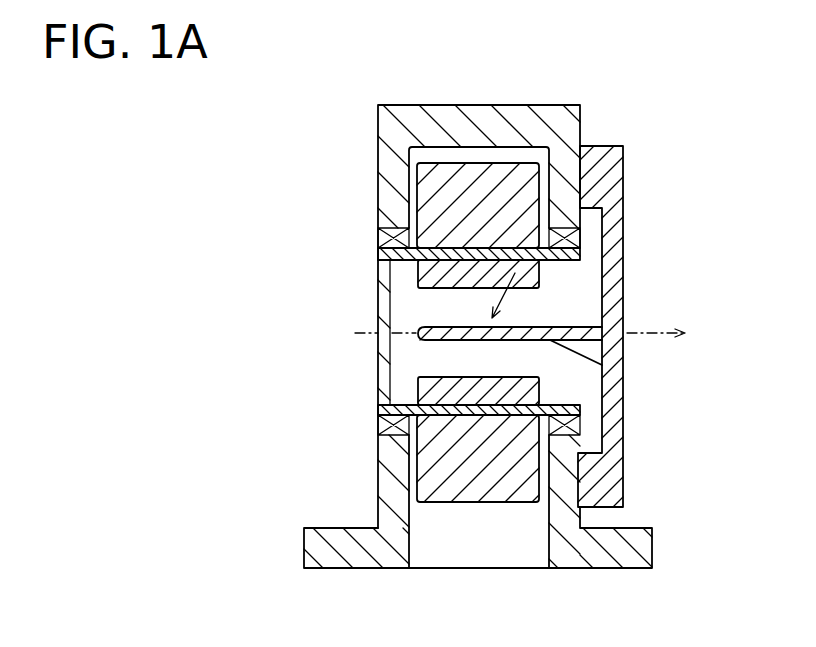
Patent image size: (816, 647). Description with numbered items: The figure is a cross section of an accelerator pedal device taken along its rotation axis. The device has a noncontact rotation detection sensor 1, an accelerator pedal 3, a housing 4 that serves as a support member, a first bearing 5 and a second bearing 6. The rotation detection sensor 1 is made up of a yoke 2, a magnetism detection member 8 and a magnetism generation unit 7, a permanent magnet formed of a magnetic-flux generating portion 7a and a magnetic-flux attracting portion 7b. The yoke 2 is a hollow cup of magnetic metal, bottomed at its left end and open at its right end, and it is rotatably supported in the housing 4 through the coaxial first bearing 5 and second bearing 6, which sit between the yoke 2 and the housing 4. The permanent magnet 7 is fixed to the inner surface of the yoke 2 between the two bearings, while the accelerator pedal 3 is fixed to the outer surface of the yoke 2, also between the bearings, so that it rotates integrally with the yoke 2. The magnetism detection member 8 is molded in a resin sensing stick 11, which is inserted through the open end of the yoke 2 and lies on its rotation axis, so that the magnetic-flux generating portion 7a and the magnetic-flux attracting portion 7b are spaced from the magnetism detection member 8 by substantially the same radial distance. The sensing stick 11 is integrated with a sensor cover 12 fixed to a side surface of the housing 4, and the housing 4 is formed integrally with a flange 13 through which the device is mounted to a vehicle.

The rotation detection sensor 1 is at (584, 289).
The yoke 2 is at (445, 243).
The accelerator pedal 3 is at (458, 190).
The housing 4 is at (478, 118).
The first bearing 5 is at (390, 237).
The second bearing 6 is at (578, 240).
The magnetism generation unit 7 is at (300, 278).
The magnetic-flux generating portion 7a is at (418, 268).
The magnetic-flux attracting portion 7b is at (418, 387).
The magnetism detection member 8 is at (538, 250).
The sensing stick 11 is at (515, 328).
The sensor cover 12 is at (623, 362).
The flange 13 is at (323, 533).